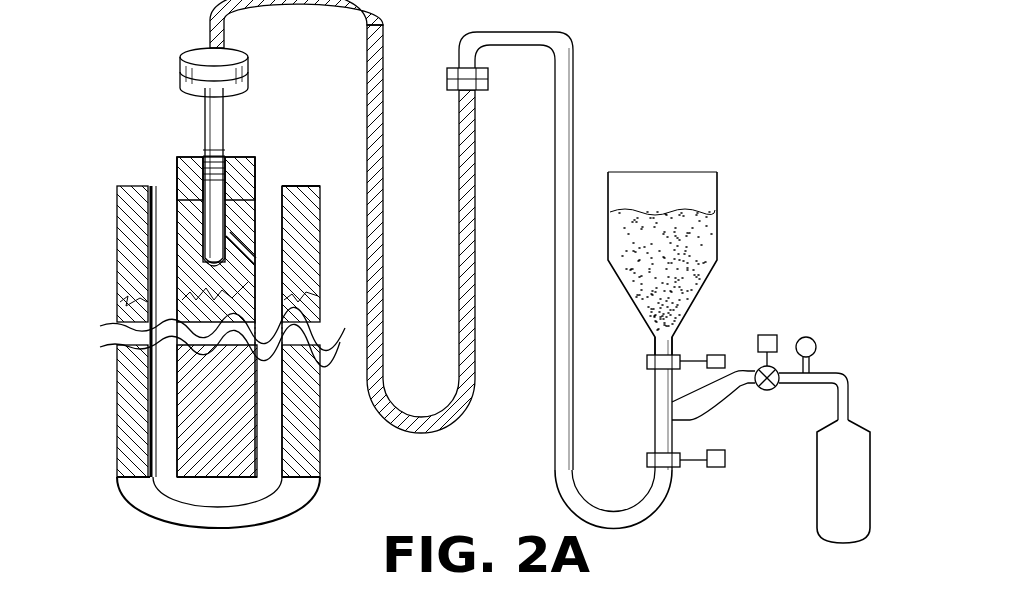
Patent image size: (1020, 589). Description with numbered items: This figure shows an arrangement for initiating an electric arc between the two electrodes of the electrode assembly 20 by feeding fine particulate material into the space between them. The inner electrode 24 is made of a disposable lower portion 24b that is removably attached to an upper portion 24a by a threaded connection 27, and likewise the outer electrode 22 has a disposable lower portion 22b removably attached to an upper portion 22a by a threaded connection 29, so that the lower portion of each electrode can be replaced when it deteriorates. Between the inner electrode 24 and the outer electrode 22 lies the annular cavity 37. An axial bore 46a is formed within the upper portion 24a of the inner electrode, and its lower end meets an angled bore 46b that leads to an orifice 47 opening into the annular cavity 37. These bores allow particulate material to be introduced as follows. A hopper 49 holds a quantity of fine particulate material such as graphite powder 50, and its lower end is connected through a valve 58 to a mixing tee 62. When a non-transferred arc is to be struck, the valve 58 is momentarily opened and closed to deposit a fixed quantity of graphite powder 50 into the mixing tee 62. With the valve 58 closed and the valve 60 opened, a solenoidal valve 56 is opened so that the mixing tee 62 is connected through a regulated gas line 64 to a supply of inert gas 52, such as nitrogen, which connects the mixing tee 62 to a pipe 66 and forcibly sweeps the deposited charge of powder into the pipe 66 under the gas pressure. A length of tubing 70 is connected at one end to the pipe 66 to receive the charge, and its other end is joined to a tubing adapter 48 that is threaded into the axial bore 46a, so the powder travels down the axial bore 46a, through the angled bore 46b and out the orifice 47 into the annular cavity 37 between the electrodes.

The electrostatic coating apparatus 20 is at (110, 319).
The outer electrode 22 is at (112, 212).
The upper portion 22a is at (121, 252).
The disposable lower portion 22b is at (118, 392).
The inner electrode 24 is at (173, 200).
The upper portion 24a is at (240, 157).
The disposable lower portion 24b is at (224, 486).
The threaded connection 27 is at (352, 331).
The threaded connection 29 is at (318, 262).
The annular cavity 37 is at (268, 374).
The axial bore 46a is at (176, 190).
The angled bore 46b is at (258, 228).
The orifice 47 is at (262, 271).
The tubing adapter 48 is at (226, 112).
The hopper 49 is at (717, 204).
The graphite powder 50 is at (681, 266).
The supply of inert gas 52 is at (861, 493).
The solenoidal valve 56 is at (773, 334).
The valve 58 is at (716, 354).
The valve 60 is at (719, 450).
The mixing tee 62 is at (655, 410).
The regulated gas line 64 is at (822, 376).
The pipe 66 is at (556, 356).
The tubing 70 is at (477, 280).